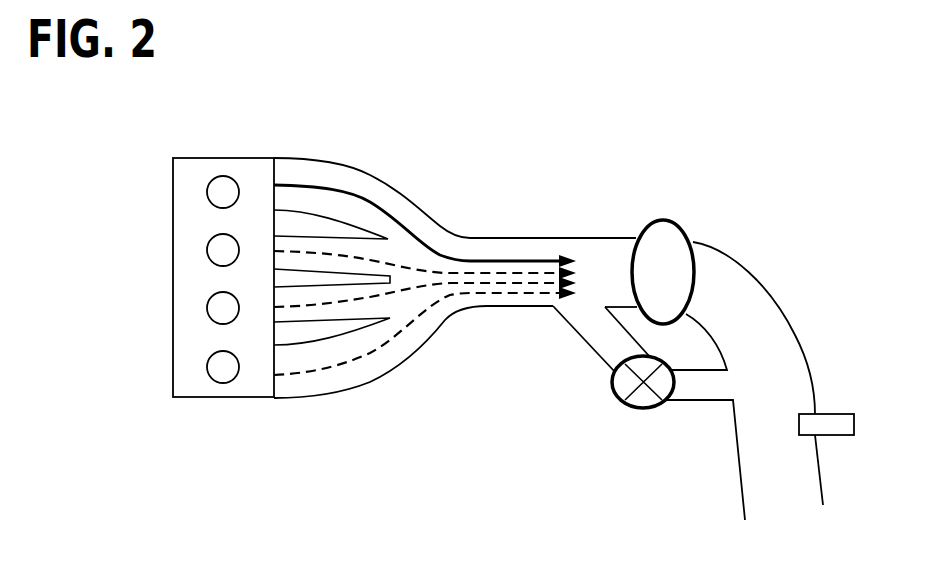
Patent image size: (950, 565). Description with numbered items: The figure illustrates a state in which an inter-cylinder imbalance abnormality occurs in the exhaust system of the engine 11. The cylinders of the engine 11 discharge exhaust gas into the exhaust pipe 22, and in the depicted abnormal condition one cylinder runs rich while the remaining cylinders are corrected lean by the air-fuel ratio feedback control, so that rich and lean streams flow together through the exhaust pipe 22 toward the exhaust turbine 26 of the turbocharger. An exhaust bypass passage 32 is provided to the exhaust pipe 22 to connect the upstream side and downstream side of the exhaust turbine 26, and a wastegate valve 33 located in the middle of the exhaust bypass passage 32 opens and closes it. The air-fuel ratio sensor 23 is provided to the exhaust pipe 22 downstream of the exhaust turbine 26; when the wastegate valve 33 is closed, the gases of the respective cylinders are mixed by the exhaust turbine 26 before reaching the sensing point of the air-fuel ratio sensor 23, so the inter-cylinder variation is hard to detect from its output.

The engine 11 is at (222, 399).
The exhaust pipe 22 is at (528, 238).
The air-fuel ratio sensor 23 is at (837, 414).
The exhaust turbine 26 is at (667, 220).
The exhaust bypass passage 32 is at (583, 343).
The wastegate valve 33 is at (645, 409).